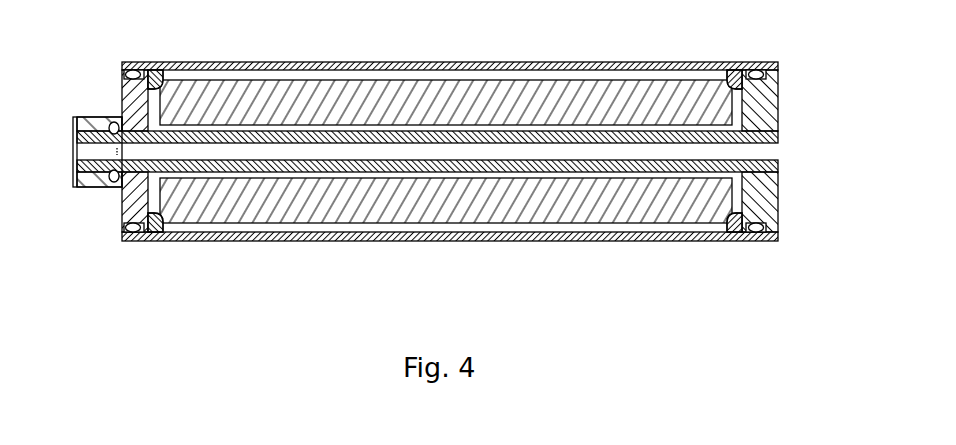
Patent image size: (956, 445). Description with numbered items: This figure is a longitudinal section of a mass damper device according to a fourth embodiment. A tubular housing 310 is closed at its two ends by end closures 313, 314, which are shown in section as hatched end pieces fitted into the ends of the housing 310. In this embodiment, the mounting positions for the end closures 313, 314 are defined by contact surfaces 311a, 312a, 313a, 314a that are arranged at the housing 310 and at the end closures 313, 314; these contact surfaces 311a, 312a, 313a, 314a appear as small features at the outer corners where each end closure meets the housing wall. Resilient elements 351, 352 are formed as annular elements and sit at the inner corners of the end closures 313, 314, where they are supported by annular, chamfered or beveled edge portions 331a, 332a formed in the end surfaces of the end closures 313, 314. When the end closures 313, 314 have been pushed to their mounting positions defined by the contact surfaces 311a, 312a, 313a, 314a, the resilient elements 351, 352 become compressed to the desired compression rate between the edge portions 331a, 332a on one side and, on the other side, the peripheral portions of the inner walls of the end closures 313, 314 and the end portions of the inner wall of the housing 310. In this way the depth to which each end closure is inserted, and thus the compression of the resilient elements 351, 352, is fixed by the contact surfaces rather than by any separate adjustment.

The housing 310 is at (466, 62).
The contact surface 311a is at (132, 69).
The contact surface 312a is at (758, 74).
The end closure 313 is at (122, 102).
The contact surface 313a is at (154, 238).
The end closure 314 is at (778, 122).
The contact surface 314a is at (745, 238).
The chamfered edge portion 331a is at (158, 74).
The chamfered edge portion 332a is at (735, 222).
The resilient element 351 is at (165, 230).
The resilient element 352 is at (728, 78).